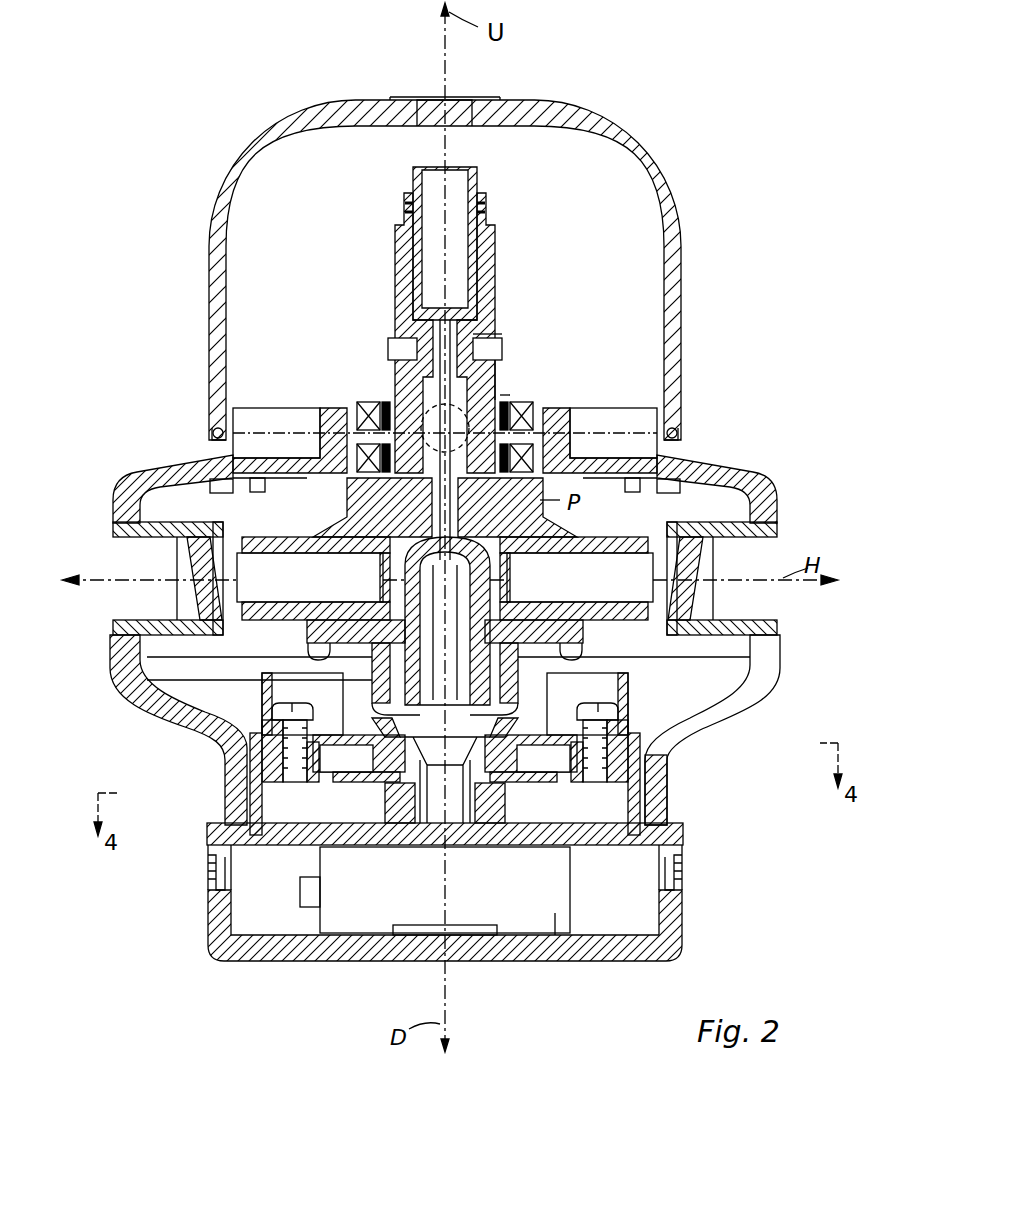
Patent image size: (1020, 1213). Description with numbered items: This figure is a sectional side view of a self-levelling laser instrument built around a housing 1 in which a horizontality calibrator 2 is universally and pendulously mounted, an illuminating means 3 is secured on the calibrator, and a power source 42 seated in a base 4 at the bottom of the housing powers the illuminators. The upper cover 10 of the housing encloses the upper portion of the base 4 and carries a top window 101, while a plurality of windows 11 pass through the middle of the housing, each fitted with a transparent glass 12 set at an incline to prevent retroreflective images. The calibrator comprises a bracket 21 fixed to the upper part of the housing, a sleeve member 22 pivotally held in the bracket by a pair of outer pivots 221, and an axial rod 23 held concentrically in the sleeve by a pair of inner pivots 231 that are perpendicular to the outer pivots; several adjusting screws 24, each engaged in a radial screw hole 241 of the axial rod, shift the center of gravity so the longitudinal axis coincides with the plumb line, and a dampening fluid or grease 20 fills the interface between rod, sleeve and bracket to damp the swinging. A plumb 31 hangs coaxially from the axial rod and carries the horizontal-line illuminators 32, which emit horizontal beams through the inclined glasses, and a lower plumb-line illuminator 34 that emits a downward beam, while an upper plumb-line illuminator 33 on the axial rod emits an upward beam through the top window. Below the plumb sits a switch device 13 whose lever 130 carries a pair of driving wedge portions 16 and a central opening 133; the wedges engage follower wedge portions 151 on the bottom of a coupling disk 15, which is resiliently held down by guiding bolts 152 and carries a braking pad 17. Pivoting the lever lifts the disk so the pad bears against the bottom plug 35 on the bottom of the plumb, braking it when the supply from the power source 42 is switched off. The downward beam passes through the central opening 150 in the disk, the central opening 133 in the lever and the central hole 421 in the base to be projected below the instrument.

The housing 1 is at (740, 460).
The horizontality calibrator 2 is at (557, 375).
The illuminating means 3 is at (617, 635).
The base 4 is at (687, 927).
The upper cover 10 is at (628, 141).
The top window 101 is at (477, 117).
The window 11 is at (137, 602).
The transparent glass 12 is at (185, 552).
The switch device 13 is at (492, 806).
The coupling disk 15 is at (633, 767).
The driving wedge portion 16 is at (215, 877).
The braking pad 17 is at (645, 807).
The dampening fluid or grease 20 is at (392, 400).
The bracket 21 is at (360, 403).
The sleeve member 22 is at (384, 405).
The axial rod 23 is at (497, 373).
The adjusting screw 24 is at (388, 340).
The plumb 31 is at (218, 478).
The horizontal-line illuminator 32 is at (170, 492).
The upper plumb-line illuminator 33 is at (433, 177).
The lower plumb-line illuminator 34 is at (417, 663).
The bottom plug 35 is at (575, 683).
The power source 42 is at (555, 915).
The lever 130 is at (413, 760).
The central opening 133 is at (480, 770).
The central opening 150 is at (385, 717).
The follower wedge portion 151 is at (447, 768).
The guiding bolt 152 is at (252, 742).
The outer pivot 221 is at (505, 397).
The inner pivot 231 is at (680, 427).
The screw hole 241 is at (503, 338).
The central hole 421 is at (405, 940).